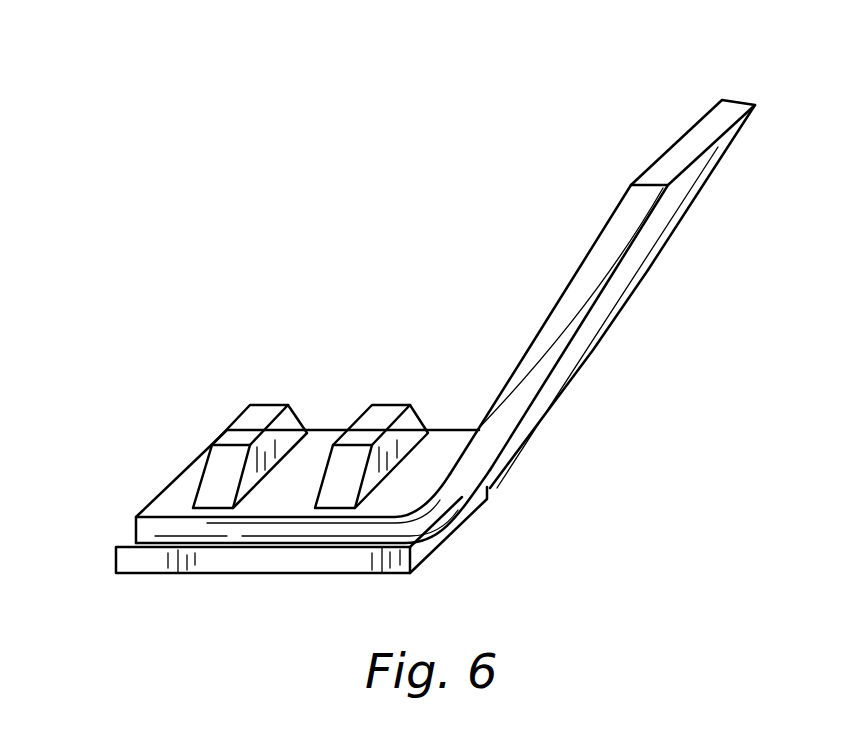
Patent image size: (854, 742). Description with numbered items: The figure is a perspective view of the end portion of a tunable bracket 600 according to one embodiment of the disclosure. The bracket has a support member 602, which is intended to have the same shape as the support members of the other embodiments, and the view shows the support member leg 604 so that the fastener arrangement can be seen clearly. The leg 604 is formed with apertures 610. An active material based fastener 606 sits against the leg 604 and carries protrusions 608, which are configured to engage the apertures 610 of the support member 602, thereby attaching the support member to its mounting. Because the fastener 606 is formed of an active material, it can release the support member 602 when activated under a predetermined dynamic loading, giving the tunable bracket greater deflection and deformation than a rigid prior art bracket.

The sensor assembly 600 is at (343, 203).
The support member 602 is at (697, 143).
The leg 604 is at (172, 498).
The active material based fastener 606 is at (217, 562).
The protrusions 608 is at (247, 423).
The apertures 610 is at (407, 468).